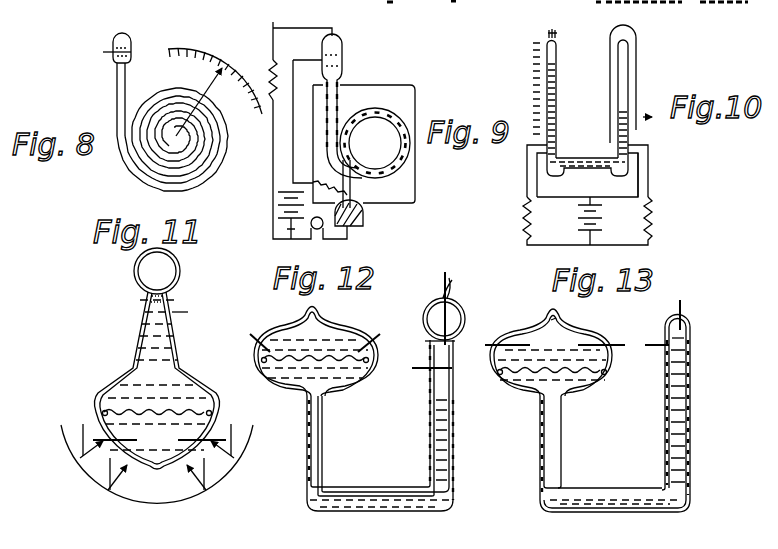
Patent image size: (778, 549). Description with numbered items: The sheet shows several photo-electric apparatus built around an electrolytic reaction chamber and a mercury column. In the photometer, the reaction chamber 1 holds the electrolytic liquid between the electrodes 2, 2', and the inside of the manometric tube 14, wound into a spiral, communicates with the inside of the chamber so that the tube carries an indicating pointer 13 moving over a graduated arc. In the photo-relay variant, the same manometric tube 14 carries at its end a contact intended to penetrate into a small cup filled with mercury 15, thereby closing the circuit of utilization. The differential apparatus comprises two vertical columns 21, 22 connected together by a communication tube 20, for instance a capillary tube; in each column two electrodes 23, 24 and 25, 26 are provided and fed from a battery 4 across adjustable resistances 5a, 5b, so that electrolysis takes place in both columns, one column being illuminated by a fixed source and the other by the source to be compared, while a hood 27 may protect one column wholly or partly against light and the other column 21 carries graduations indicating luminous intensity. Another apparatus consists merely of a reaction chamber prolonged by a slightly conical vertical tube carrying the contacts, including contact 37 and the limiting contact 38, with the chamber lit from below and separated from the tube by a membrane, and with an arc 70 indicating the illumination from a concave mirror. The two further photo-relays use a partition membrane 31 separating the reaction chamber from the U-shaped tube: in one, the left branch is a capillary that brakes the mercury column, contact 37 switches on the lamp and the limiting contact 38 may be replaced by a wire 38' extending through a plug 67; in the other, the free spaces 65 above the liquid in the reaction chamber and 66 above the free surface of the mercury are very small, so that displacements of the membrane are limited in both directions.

In FIG. 8, the reaction chamber 1 is at (133, 44).
In FIG. 8, the electrode 2 is at (109, 37).
In FIG. 11, the electrode 2 is at (111, 430).
In FIG. 12, the electrode 2 is at (260, 333).
In FIG. 13, the electrode 2 is at (507, 336).
In FIG. 11, the electrode 2' is at (204, 430).
In FIG. 12, the electrode 2' is at (369, 333).
In FIG. 13, the electrode 2' is at (623, 335).
In FIG. 10, the battery 4 is at (579, 221).
In FIG. 10, the adjustable resistance 5a is at (527, 226).
In FIG. 10, the adjustable resistance 5b is at (650, 230).
In FIG. 8, the indicating pointer 13 is at (215, 92).
In FIG. 8, the manometric tube 14 is at (215, 170).
In FIG. 9, the manometric tube 14 is at (366, 121).
In FIG. 9, the cup filled with mercury 15 is at (364, 214).
In FIG. 10, the communication tube 20 is at (598, 166).
In FIG. 10, the vertical column 21 is at (557, 95).
In FIG. 10, the vertical column 22 is at (630, 100).
In FIG. 10, the electrode 23 is at (527, 150).
In FIG. 10, the electrode 24 is at (537, 178).
In FIG. 10, the electrode 25 is at (640, 182).
In FIG. 10, the electrode 26 is at (650, 156).
In FIG. 10, the hood 27 is at (642, 47).
In FIG. 12, the partition membrane 31 is at (300, 366).
In FIG. 13, the partition membrane 31 is at (590, 410).
In FIG. 11, the contact 37 is at (140, 333).
In FIG. 12, the contact 37 is at (420, 368).
In FIG. 11, the limiting contact 38 is at (190, 302).
In FIG. 12, the limiting contact 38 is at (413, 314).
In FIG. 13, the limiting contact 38 is at (695, 312).
In FIG. 12, the wire 38' is at (441, 304).
In FIG. 13, the free space above the liquid 65 is at (560, 318).
In FIG. 13, the free space above the mercury 66 is at (676, 337).
In FIG. 12, the plug 67 is at (430, 341).
In FIG. 11, the scale arc 70 is at (157, 475).